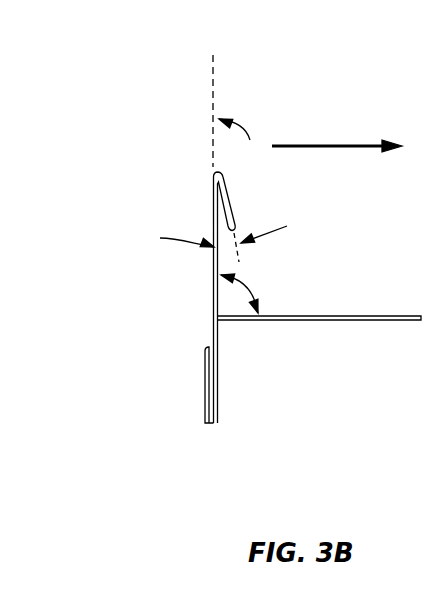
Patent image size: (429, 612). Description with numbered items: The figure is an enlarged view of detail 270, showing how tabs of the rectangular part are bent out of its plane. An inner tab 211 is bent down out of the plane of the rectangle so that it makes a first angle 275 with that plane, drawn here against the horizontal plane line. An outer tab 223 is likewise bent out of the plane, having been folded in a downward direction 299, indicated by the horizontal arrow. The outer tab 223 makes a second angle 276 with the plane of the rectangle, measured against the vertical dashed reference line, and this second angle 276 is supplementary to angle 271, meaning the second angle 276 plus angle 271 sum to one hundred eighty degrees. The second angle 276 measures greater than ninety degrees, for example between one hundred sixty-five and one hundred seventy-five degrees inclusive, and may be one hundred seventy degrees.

The inner tab 211 is at (314, 330).
The outer tab 223 is at (239, 196).
The detail 270 is at (207, 100).
The angle 271 is at (217, 252).
The first angle 275 is at (250, 283).
The second angle 276 is at (233, 168).
The downward direction 299 is at (305, 141).